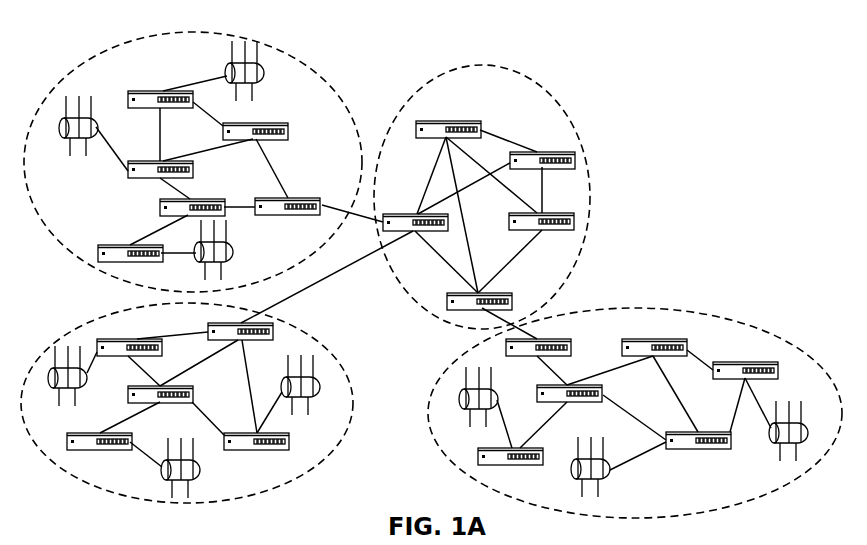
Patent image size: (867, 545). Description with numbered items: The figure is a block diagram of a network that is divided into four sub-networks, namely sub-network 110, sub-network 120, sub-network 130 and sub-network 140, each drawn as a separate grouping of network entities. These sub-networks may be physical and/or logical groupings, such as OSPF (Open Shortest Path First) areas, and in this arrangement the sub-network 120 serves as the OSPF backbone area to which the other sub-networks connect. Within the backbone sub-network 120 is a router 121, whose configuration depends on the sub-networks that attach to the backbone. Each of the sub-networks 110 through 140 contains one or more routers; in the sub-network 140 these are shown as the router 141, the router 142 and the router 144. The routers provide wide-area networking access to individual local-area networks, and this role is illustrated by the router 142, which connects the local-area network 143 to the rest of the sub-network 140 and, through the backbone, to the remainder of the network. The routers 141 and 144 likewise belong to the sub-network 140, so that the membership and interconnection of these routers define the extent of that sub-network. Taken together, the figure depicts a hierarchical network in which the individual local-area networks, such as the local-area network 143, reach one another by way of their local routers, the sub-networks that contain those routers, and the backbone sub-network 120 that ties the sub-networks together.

The sub-network 110 is at (302, 58).
The sub-network 120 is at (437, 201).
The router 121 is at (552, 230).
The sub-network 130 is at (302, 332).
The sub-network 140 is at (635, 399).
The router 141 is at (655, 340).
The router 142 is at (745, 362).
The local-area network 143 is at (792, 440).
The router 144 is at (698, 449).